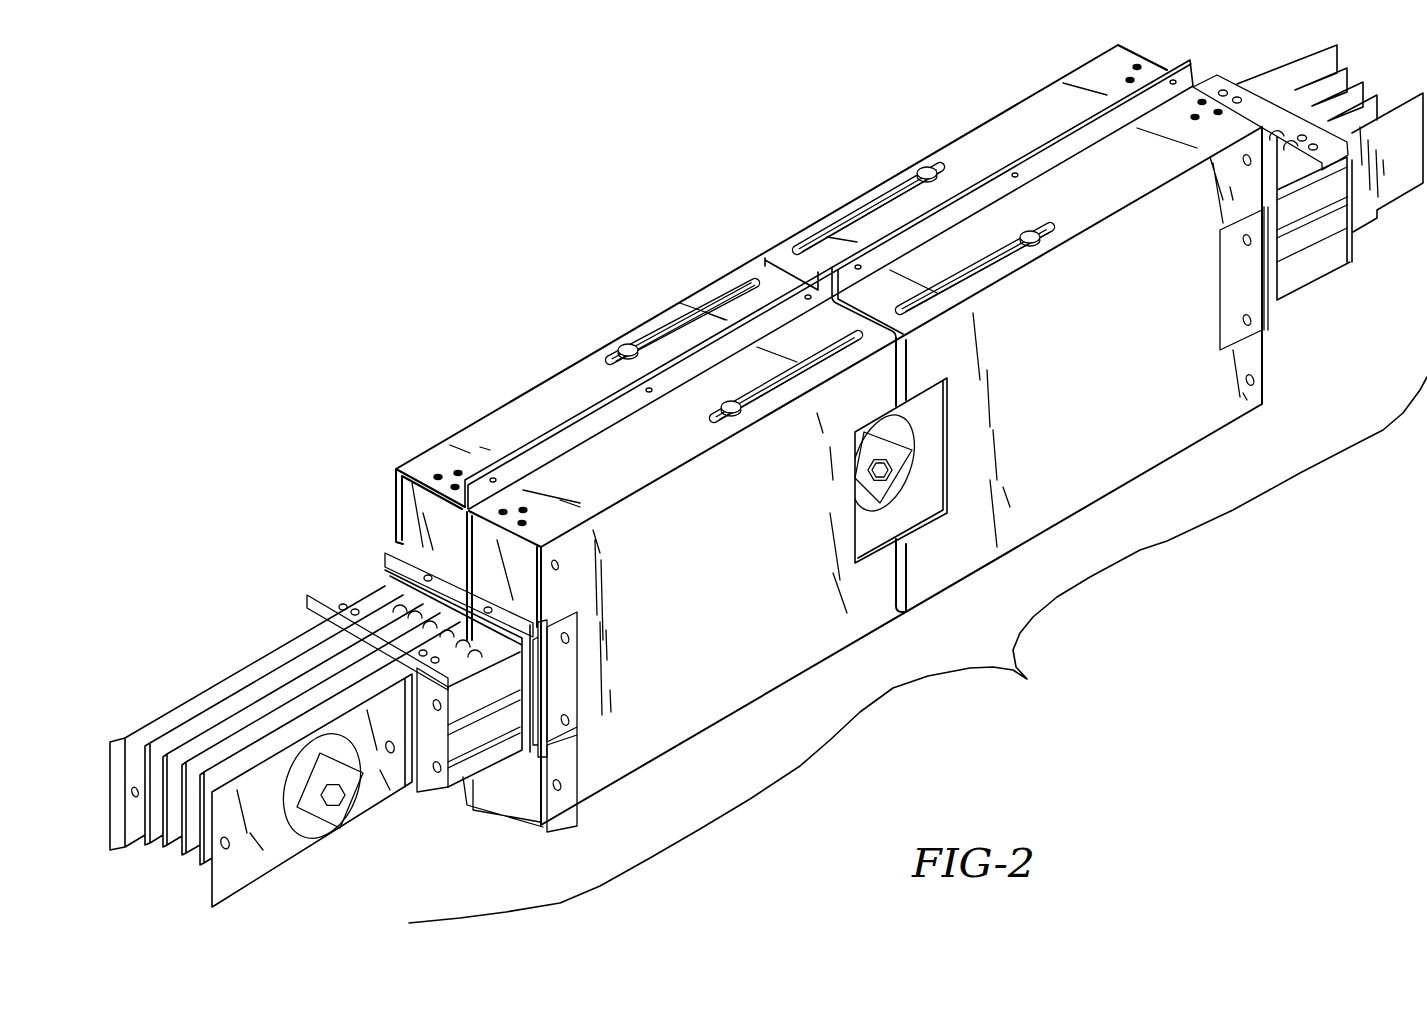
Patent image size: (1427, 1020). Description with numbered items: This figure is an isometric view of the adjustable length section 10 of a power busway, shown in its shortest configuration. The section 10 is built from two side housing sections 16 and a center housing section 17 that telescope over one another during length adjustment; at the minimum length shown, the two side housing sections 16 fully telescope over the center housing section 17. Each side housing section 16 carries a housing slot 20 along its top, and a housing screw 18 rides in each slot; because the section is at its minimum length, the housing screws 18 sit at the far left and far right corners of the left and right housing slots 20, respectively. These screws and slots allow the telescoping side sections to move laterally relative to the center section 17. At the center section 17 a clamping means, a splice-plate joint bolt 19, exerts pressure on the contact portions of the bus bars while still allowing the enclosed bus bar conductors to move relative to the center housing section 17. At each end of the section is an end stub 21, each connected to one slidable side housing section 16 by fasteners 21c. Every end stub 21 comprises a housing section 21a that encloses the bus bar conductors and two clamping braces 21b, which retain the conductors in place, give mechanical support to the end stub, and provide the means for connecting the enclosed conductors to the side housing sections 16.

The adjustable length section 10 is at (918, 650).
The side housing section 16 is at (508, 418).
The center housing section 17 is at (765, 262).
The housing screw 18 is at (930, 170).
The splice-plate joint bolt 19 is at (863, 493).
The housing slot 20 is at (658, 333).
The end stub 21 is at (383, 594).
The housing section 21a is at (470, 657).
The clamping brace 21b is at (380, 575).
The fastener 21c is at (551, 700).